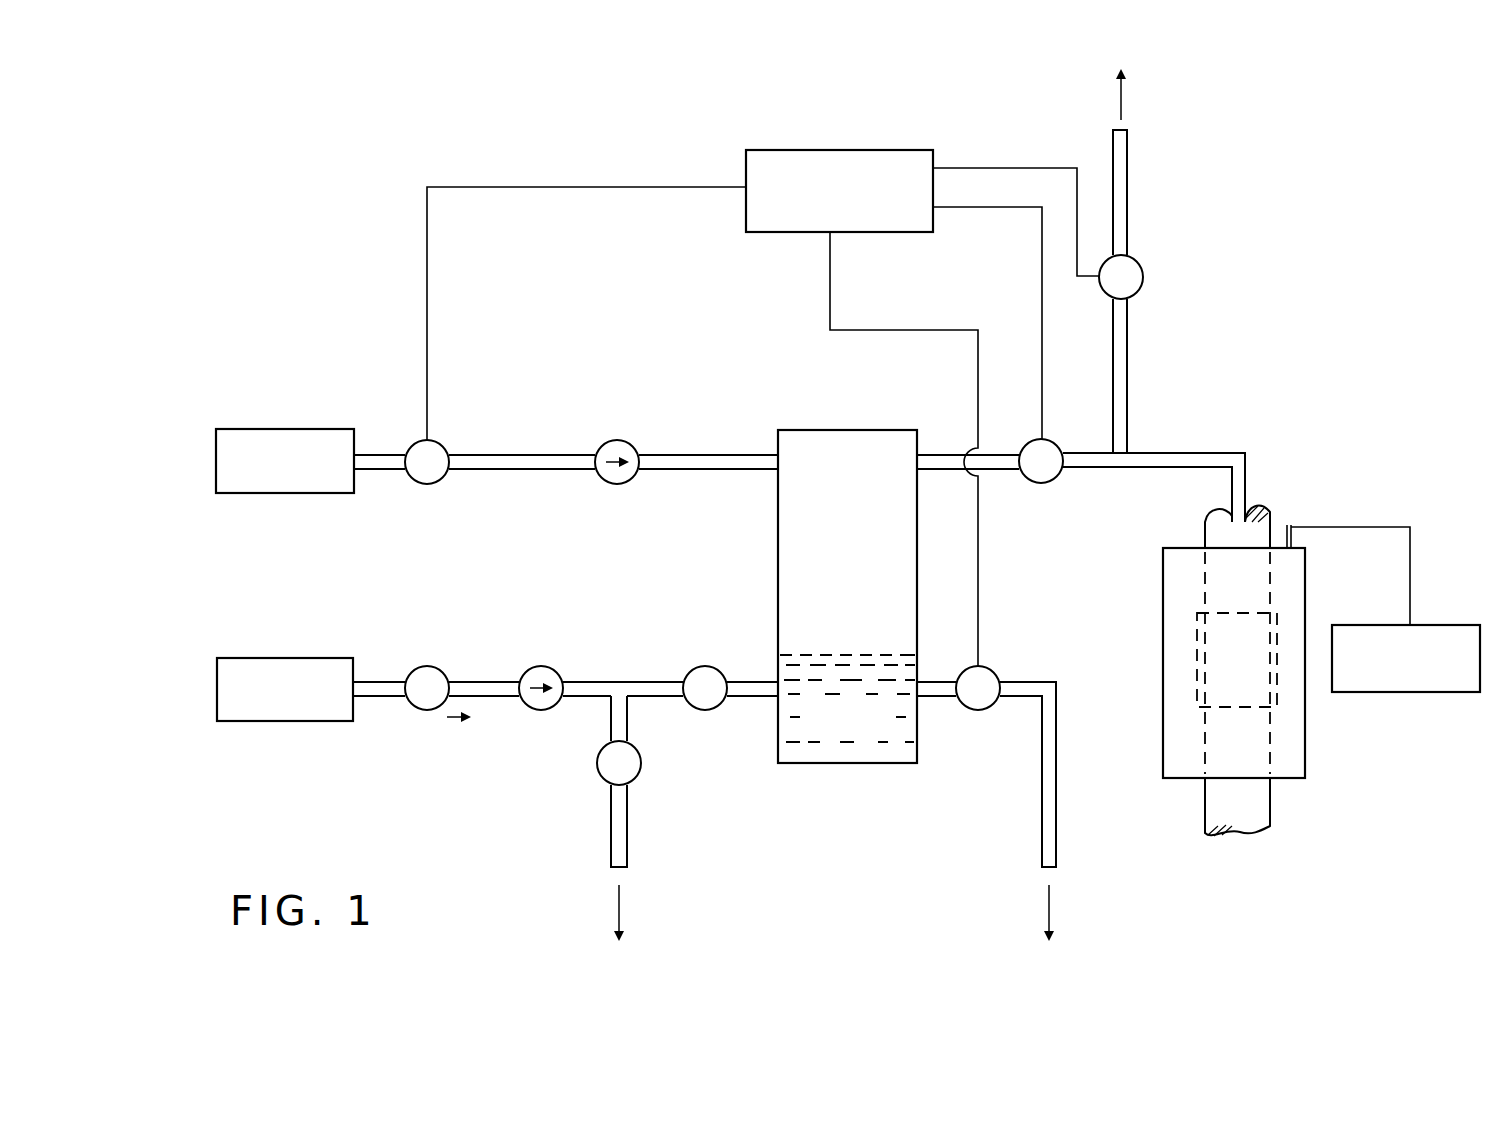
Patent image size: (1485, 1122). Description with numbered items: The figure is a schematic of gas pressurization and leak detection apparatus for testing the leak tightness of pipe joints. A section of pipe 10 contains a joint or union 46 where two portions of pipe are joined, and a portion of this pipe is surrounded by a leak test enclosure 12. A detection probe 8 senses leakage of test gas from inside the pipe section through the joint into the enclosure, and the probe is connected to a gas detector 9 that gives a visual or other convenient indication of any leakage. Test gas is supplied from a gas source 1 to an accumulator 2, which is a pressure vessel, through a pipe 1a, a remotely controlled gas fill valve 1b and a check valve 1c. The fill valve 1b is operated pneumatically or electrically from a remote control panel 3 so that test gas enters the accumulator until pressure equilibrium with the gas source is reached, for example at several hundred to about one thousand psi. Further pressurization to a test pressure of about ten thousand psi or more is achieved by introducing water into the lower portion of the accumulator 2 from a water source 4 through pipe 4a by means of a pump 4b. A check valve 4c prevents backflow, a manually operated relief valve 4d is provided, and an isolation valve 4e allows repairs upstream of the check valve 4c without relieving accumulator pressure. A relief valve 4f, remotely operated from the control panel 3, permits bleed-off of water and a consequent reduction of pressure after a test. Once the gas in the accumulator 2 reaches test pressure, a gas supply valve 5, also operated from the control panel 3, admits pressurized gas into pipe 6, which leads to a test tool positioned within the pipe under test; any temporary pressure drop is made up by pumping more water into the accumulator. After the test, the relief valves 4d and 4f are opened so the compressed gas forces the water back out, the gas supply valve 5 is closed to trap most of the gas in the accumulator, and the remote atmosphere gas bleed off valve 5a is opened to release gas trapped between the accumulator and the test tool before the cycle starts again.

The gas source 1 is at (326, 497).
The pipe 1a is at (371, 452).
The gas fill valve 1b is at (430, 483).
The check valve 1c is at (628, 444).
The accumulator 2 is at (778, 556).
The control panel 3 is at (880, 150).
The water source 4 is at (315, 722).
The pipe 4a is at (392, 688).
The pump 4b is at (427, 706).
The check valve 4c is at (553, 677).
The relief valve 4d is at (637, 767).
The isolation valve 4e is at (703, 668).
The relief valve 4f is at (995, 675).
The gas supply valve 5 is at (1054, 478).
The atmosphere gas bleed off valve 5a is at (1143, 270).
The pipe 6 is at (1178, 452).
The detection probe 8 is at (1294, 533).
The gas detector 9 is at (1436, 692).
The pipe 10 is at (1264, 812).
The leak test enclosure 12 is at (1165, 580).
The joint 46 is at (1196, 650).